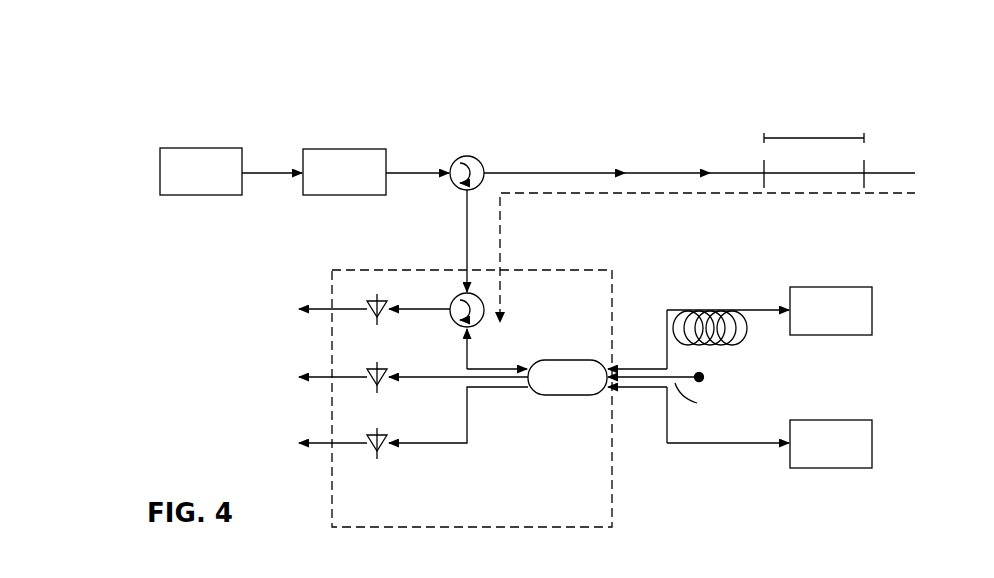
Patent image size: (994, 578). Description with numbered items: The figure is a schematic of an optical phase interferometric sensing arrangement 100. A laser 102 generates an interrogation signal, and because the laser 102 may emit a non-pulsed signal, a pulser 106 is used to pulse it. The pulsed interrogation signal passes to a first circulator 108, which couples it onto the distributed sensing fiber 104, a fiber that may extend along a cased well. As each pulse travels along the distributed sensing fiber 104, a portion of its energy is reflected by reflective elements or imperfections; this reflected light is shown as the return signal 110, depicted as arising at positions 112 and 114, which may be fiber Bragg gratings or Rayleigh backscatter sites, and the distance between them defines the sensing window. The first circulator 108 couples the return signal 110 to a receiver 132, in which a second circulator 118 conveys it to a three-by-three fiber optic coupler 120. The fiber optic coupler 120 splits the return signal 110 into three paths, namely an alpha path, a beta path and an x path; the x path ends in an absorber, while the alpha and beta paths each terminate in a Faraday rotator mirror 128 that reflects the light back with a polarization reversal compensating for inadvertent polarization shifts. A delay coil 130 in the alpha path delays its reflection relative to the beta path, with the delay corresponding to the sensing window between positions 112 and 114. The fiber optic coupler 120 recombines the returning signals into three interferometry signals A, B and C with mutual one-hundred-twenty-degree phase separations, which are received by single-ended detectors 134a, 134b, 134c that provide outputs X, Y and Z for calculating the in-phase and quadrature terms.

The optical phase interferometric sensing arrangement 100 is at (128, 52).
The laser 102 is at (200, 148).
The distributed sensing fiber 104 is at (577, 168).
The pulser 106 is at (343, 149).
The first circulator 108 is at (472, 156).
The return signal 110 is at (700, 194).
The reflection position 112 is at (763, 160).
The reflection position 114 is at (867, 160).
The second circulator 118 is at (490, 308).
The 3×3 fiber optic coupler 120 is at (566, 397).
The Faraday rotator mirror 128 is at (832, 285).
The delay coil 130 is at (737, 343).
The receiver 132 is at (397, 270).
The single-ended detector 134a is at (358, 310).
The single-ended detector 134b is at (358, 377).
The single-ended detector 134c is at (360, 442).